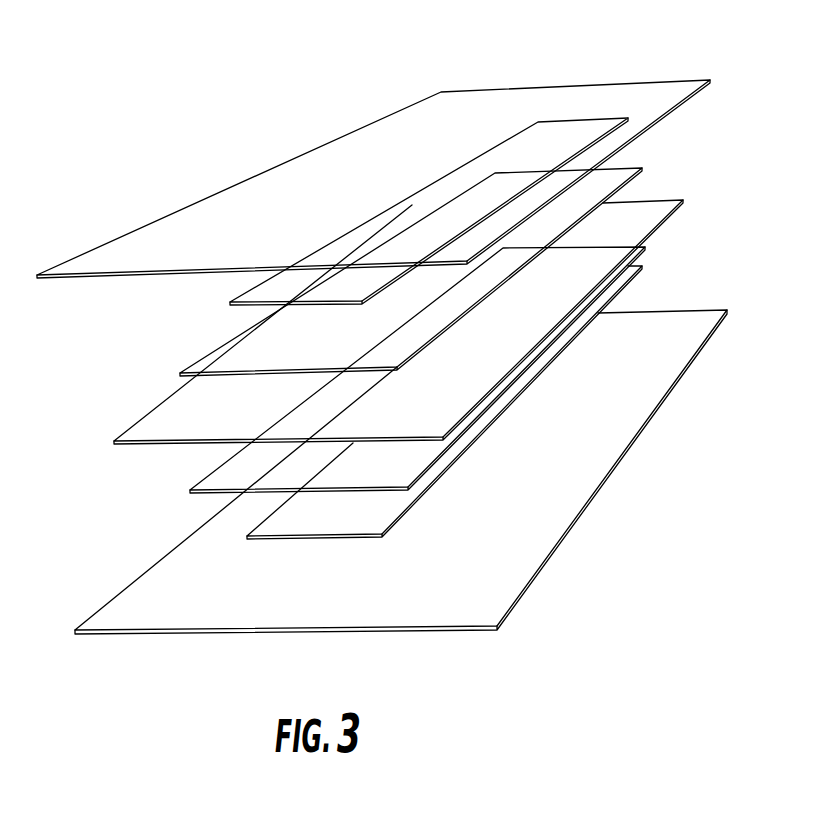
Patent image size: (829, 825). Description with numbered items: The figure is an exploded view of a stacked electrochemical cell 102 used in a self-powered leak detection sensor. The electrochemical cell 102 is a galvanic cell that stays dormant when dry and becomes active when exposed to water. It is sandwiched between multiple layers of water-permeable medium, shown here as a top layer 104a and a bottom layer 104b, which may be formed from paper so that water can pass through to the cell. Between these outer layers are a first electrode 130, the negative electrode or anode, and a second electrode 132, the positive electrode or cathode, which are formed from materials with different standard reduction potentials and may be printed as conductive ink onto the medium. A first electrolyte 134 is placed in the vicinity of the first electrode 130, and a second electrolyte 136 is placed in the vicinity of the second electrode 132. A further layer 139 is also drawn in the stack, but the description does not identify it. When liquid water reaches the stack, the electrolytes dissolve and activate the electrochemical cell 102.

The electrochemical cell 102 is at (204, 68).
The bottom layer 104b is at (208, 220).
The second electrode 132 is at (256, 294).
The second electrolyte 136 is at (221, 354).
The intermediate layer 139 is at (130, 430).
The first electrolyte 134 is at (205, 493).
The first electrode 130 is at (288, 528).
The top layer 104a is at (565, 506).